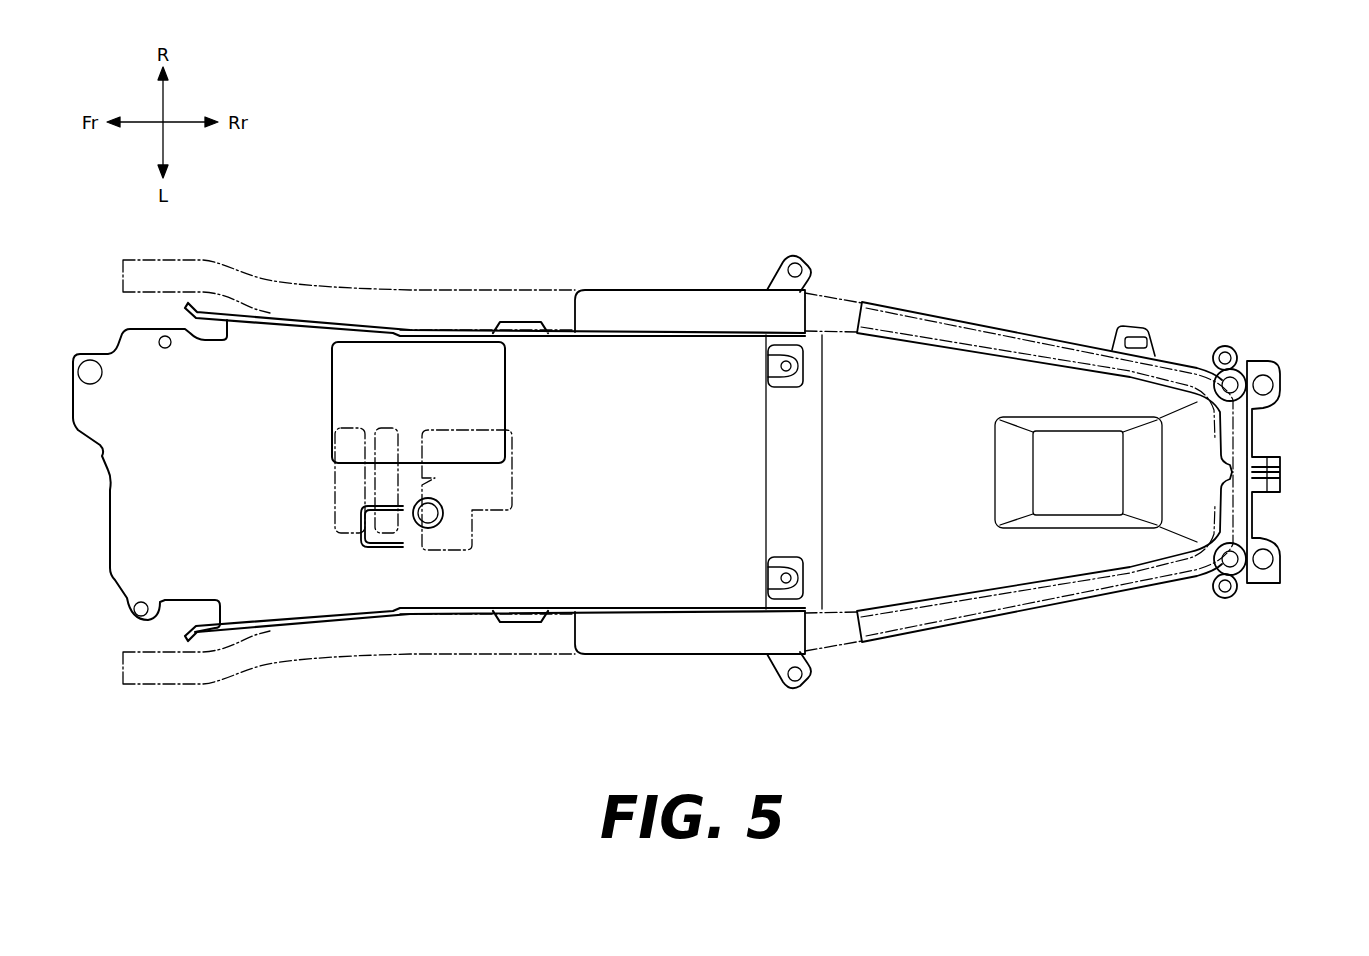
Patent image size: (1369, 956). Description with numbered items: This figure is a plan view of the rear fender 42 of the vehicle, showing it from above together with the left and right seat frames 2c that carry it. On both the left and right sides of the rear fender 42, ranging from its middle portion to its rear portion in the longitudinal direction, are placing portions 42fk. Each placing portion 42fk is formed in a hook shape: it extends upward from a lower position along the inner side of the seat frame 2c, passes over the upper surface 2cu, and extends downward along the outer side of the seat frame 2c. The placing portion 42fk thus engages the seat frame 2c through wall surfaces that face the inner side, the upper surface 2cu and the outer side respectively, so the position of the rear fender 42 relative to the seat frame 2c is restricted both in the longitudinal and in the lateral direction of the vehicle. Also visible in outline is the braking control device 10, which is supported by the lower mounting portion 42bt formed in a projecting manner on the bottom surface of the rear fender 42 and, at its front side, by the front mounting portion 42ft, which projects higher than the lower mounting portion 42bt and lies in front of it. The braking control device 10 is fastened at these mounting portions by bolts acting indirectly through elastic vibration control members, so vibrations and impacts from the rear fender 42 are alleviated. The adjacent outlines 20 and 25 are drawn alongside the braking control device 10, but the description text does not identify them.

The seat frame 2c is at (368, 284).
The upper surface 2cu is at (462, 313).
The placing portion 42fk is at (670, 290).
The rear fender 42 is at (1254, 421).
The electric component 20 is at (326, 498).
The harness component 25 is at (396, 420).
The braking control device 10 is at (460, 420).
The front mounting portion 42ft is at (368, 548).
The lower mounting portion 42bt is at (430, 528).